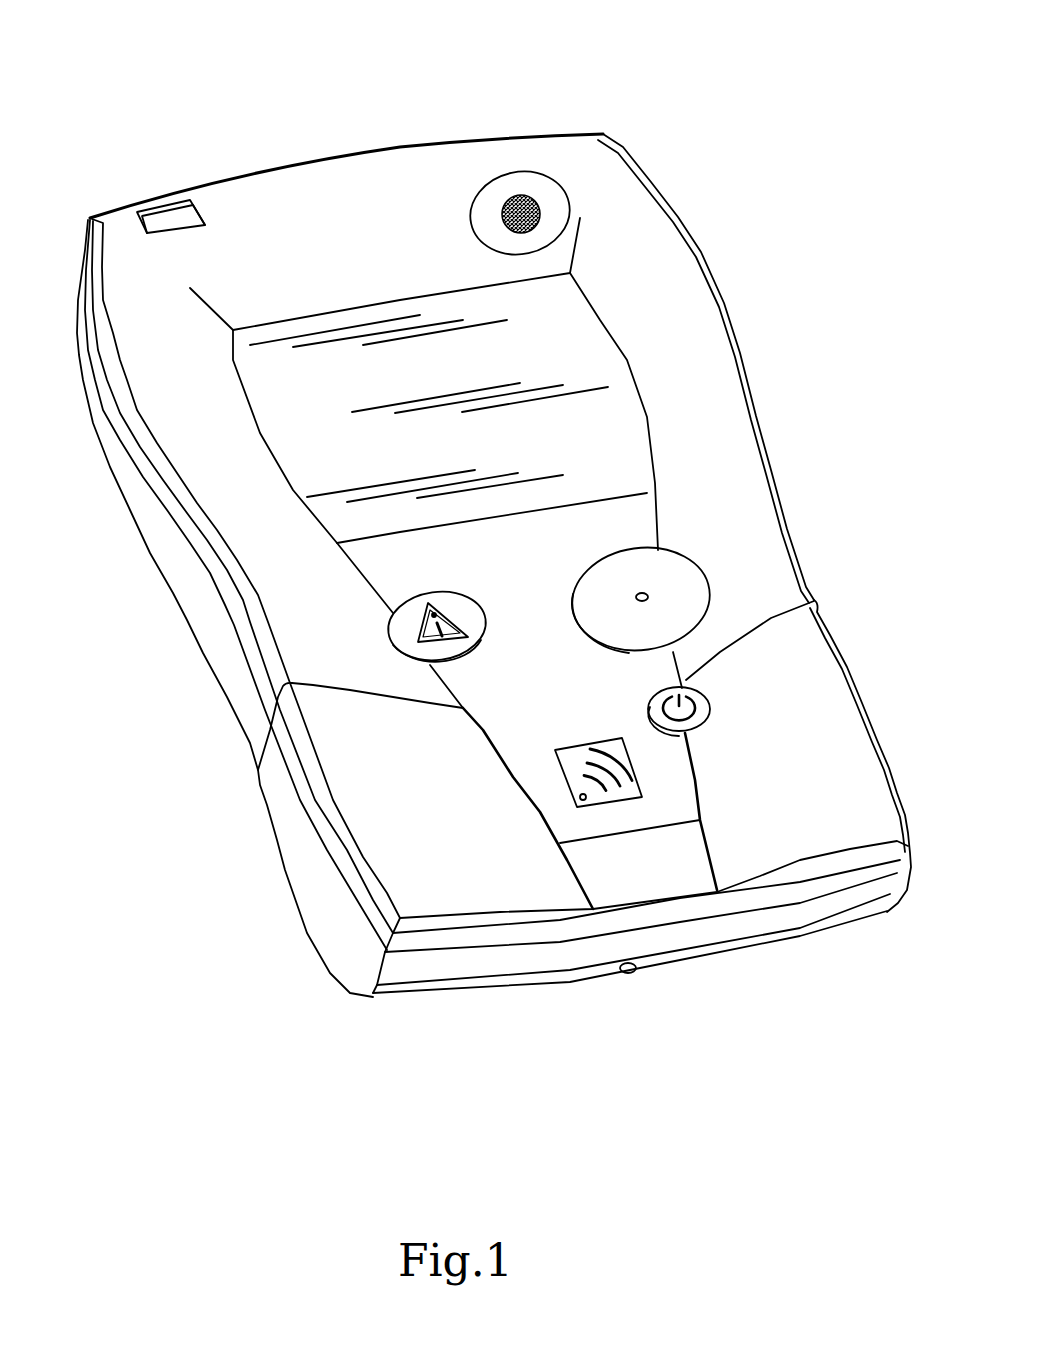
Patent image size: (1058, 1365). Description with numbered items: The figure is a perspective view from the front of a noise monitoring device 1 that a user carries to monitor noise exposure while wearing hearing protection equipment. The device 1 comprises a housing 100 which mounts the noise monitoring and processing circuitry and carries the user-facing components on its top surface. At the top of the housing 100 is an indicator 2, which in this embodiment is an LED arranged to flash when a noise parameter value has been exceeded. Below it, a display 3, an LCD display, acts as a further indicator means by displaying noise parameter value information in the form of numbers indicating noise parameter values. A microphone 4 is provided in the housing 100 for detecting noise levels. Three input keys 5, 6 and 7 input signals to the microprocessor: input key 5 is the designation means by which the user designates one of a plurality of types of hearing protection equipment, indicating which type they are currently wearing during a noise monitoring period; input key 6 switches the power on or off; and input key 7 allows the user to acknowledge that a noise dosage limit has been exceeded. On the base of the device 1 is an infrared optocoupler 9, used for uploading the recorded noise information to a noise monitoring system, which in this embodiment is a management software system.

The noise monitoring device 1 is at (757, 295).
The device housing 100 is at (364, 178).
The indicator 2 is at (198, 183).
The display 3 is at (600, 432).
The microphone 4 is at (528, 200).
The input key 5 is at (686, 592).
The input key 6 is at (706, 708).
The input key 7 is at (407, 655).
The optocoupler 9 is at (637, 973).